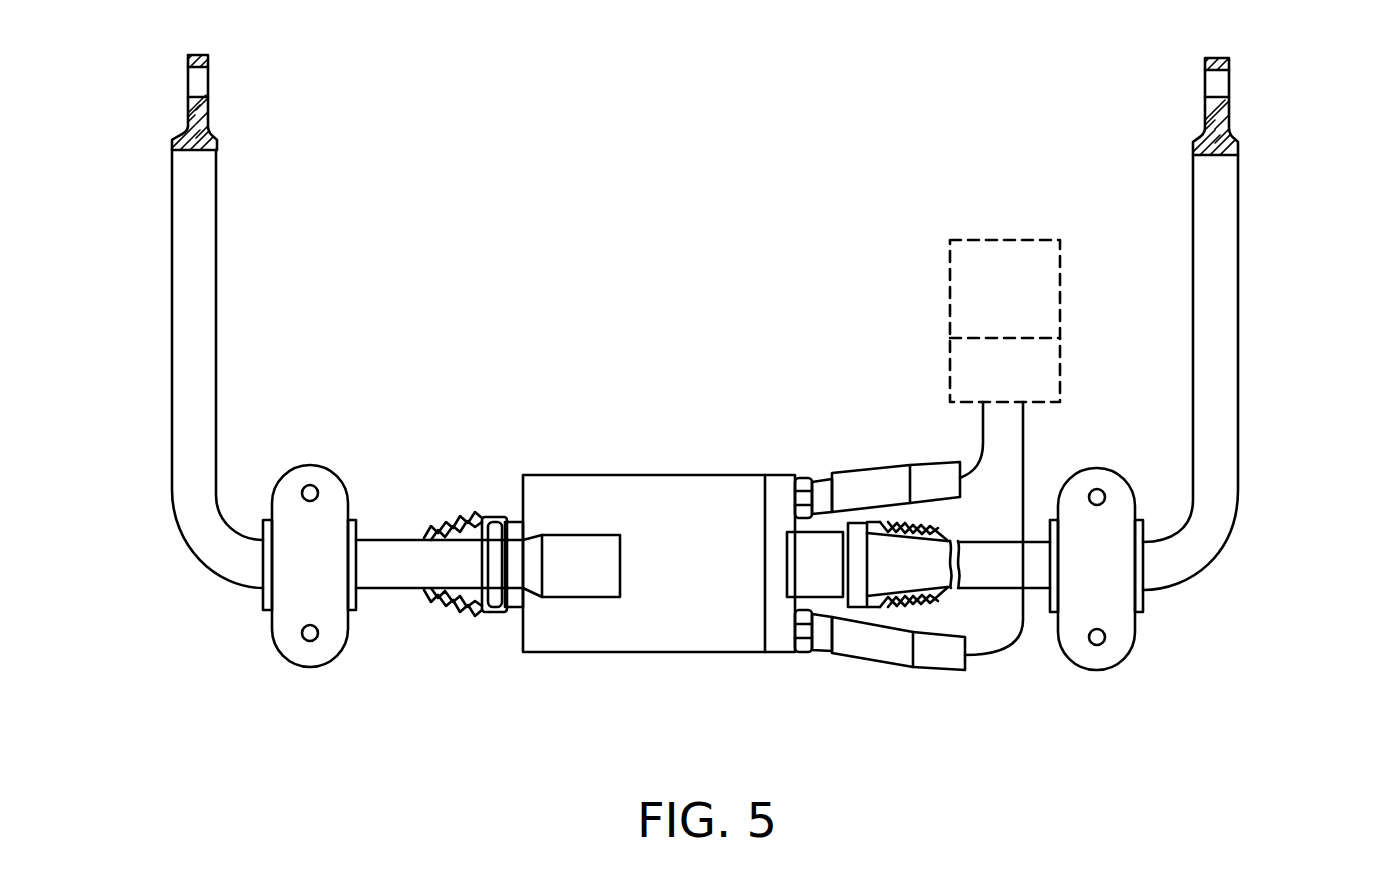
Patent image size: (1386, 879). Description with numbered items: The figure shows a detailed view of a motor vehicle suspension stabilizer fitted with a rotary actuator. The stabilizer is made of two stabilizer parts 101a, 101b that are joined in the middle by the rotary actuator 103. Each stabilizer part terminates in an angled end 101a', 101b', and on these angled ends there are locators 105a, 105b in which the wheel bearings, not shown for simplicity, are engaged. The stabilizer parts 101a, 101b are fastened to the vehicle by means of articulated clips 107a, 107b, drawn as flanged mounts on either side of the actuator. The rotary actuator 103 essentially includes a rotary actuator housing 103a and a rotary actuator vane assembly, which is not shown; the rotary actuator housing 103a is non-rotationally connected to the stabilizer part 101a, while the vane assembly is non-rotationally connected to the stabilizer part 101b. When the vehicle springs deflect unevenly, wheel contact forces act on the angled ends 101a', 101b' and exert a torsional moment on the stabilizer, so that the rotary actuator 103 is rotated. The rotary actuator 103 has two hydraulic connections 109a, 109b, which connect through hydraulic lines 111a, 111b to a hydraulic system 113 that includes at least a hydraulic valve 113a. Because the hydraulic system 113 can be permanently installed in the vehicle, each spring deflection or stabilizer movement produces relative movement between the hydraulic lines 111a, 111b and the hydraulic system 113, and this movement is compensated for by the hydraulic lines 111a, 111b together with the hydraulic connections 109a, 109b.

The stabilizer part 101a is at (958, 604).
The angled end 101a' is at (1254, 372).
The stabilizer part 101b is at (439, 593).
The angled end 101b' is at (251, 369).
The rotary actuator 103 is at (583, 652).
The rotary actuator housing 103a is at (690, 488).
The locator 105a is at (1223, 82).
The locator 105b is at (203, 78).
The articulated clip 107a is at (1120, 643).
The articulated clip 107b is at (280, 637).
The hydraulic connection 109a is at (820, 640).
The hydraulic connection 109b is at (813, 478).
The hydraulic line 111a is at (893, 650).
The hydraulic line 111b is at (880, 486).
The hydraulic system 113 is at (876, 297).
The hydraulic valve 113a is at (1037, 358).